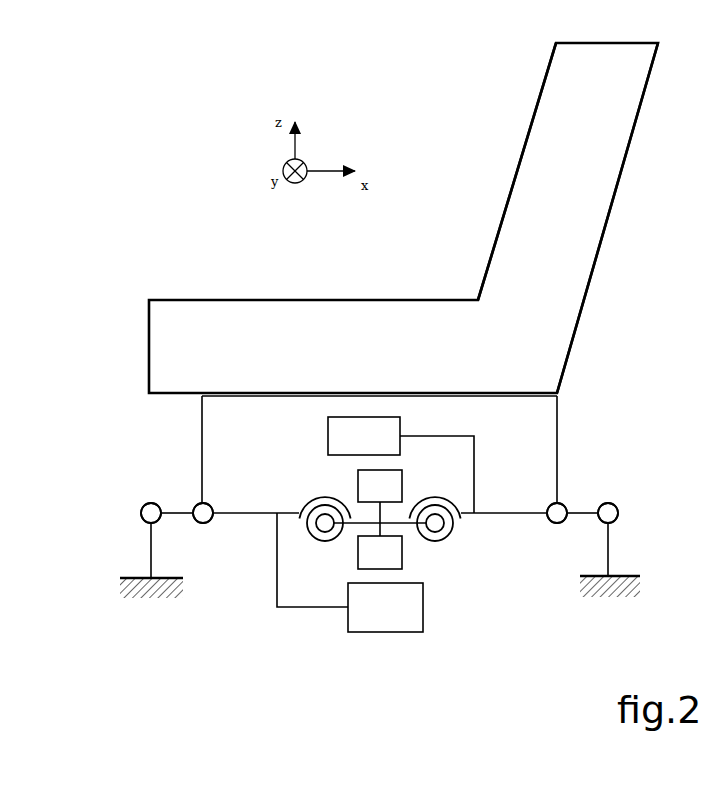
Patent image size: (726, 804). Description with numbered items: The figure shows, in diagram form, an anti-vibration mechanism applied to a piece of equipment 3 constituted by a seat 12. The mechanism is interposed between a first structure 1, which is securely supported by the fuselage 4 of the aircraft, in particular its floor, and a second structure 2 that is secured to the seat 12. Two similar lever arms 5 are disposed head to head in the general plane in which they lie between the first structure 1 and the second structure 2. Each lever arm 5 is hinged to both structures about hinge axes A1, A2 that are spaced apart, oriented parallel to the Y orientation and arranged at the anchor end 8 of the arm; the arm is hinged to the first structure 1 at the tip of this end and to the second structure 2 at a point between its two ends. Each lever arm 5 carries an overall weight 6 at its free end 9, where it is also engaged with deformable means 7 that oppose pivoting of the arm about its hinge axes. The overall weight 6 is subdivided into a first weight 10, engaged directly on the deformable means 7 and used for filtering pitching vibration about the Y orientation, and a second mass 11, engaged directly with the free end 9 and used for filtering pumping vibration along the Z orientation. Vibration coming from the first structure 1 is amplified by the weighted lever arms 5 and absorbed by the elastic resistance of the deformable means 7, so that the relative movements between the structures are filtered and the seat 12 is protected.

The first structure 1 is at (377, 582).
The second structure 2 is at (520, 394).
The equipment 3 is at (422, 247).
The fuselage 4 is at (158, 599).
The lever arm 5 is at (232, 512).
The overall weight 6 is at (316, 455).
The deformable means 7 is at (305, 500).
The anchor end 8 is at (176, 488).
The free end 9 is at (433, 470).
The first weight 10 is at (380, 519).
The second mass 11 is at (375, 524).
The seat 12 is at (568, 218).
The hinge axis A1 is at (141, 512).
The hinge axis A2 is at (205, 523).